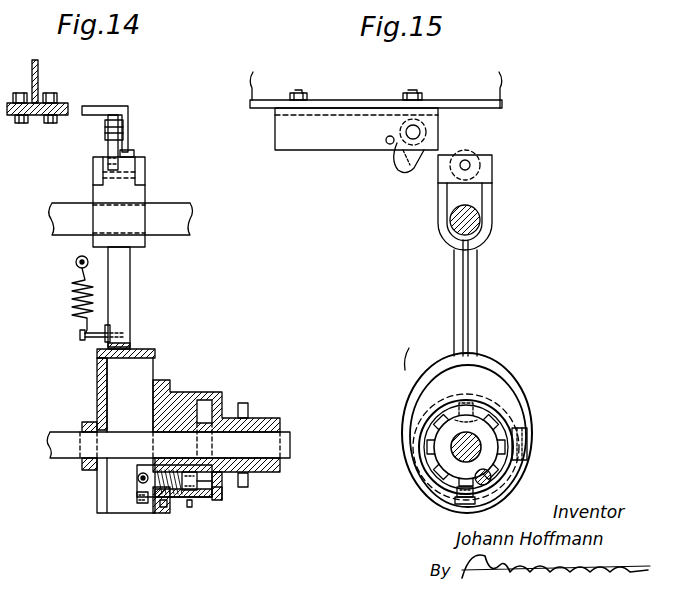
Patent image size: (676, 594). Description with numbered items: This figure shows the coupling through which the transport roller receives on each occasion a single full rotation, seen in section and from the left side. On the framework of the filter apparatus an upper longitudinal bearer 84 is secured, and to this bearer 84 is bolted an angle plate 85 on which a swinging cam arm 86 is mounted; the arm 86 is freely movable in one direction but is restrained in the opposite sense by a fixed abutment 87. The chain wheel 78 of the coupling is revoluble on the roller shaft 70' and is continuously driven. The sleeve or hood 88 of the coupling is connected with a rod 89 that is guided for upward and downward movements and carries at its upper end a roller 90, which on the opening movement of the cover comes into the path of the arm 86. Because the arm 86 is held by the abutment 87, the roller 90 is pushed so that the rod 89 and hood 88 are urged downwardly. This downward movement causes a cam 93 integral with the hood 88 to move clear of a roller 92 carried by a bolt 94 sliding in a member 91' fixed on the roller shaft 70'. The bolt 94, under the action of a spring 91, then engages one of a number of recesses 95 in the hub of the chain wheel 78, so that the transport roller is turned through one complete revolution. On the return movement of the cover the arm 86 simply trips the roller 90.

In FIG. 14, the upper longitudinal bearer 84 is at (38, 84).
In FIG. 15, the upper longitudinal bearer 84 is at (255, 88).
In FIG. 14, the angle plate 85 is at (110, 106).
In FIG. 15, the angle plate 85 is at (280, 138).
In FIG. 14, the swinging cam arm 86 is at (145, 166).
In FIG. 15, the swinging cam arm 86 is at (396, 164).
In FIG. 14, the fixed abutment 87 is at (108, 146).
In FIG. 15, the fixed abutment 87 is at (387, 143).
In FIG. 14, the sleeve or hood 88 is at (104, 370).
In FIG. 15, the sleeve or hood 88 is at (408, 423).
In FIG. 14, the rod 89 is at (121, 299).
In FIG. 15, the rod 89 is at (476, 288).
In FIG. 14, the roller 90 is at (128, 153).
In FIG. 15, the roller 90 is at (466, 156).
In FIG. 14, the spring 91 is at (174, 500).
In FIG. 15, the spring 91 is at (511, 493).
In FIG. 14, the member fixed on the roller shaft 91' is at (216, 390).
In FIG. 14, the roller 92 is at (134, 511).
In FIG. 15, the roller 92 is at (465, 500).
In FIG. 14, the cam 93 is at (150, 434).
In FIG. 15, the cam 93 is at (516, 443).
In FIG. 14, the bolt 94 is at (214, 489).
In FIG. 15, the bolt 94 is at (455, 488).
In FIG. 14, the recess 95 is at (216, 420).
In FIG. 15, the recess 95 is at (468, 403).
In FIG. 14, the chain wheel 78 is at (249, 407).
In FIG. 15, the chain wheel 78 is at (430, 458).
In FIG. 14, the roller shaft 70' is at (157, 457).
In FIG. 15, the roller shaft 70' is at (525, 456).